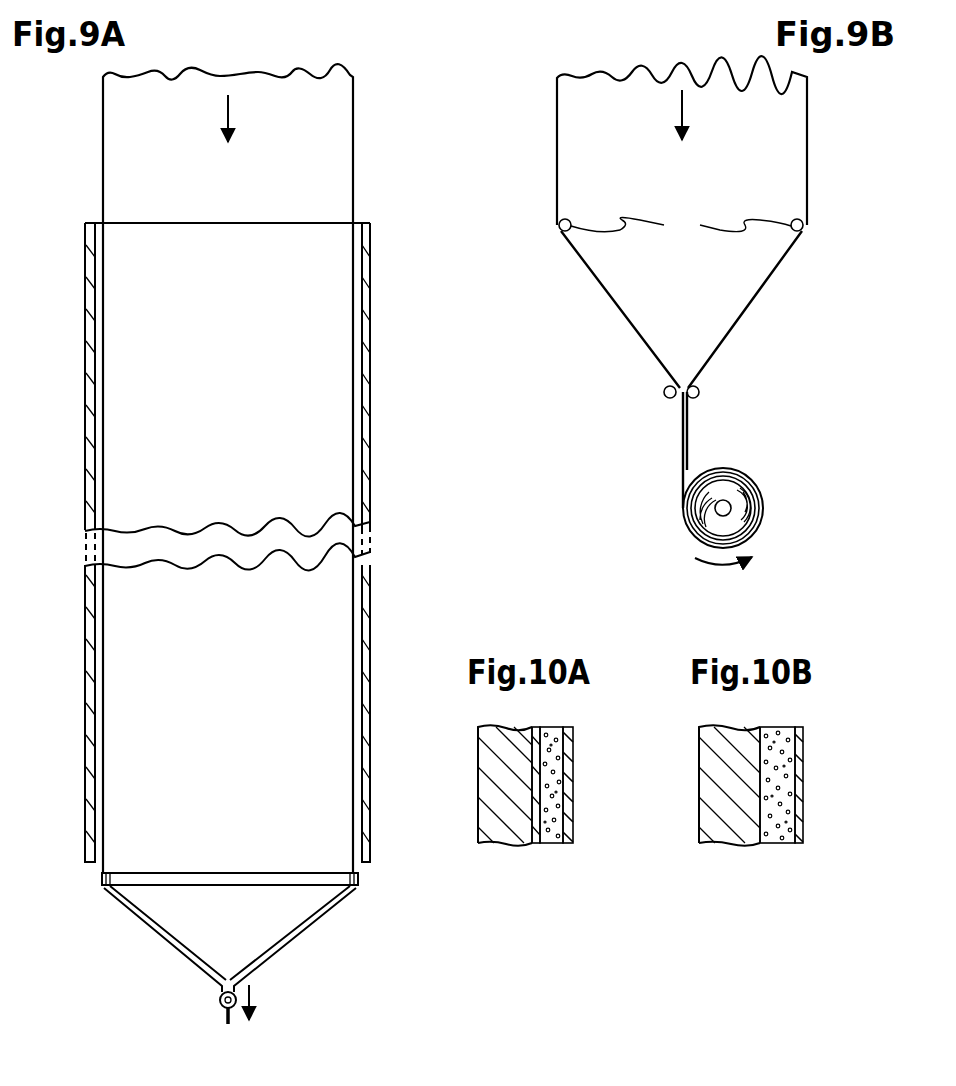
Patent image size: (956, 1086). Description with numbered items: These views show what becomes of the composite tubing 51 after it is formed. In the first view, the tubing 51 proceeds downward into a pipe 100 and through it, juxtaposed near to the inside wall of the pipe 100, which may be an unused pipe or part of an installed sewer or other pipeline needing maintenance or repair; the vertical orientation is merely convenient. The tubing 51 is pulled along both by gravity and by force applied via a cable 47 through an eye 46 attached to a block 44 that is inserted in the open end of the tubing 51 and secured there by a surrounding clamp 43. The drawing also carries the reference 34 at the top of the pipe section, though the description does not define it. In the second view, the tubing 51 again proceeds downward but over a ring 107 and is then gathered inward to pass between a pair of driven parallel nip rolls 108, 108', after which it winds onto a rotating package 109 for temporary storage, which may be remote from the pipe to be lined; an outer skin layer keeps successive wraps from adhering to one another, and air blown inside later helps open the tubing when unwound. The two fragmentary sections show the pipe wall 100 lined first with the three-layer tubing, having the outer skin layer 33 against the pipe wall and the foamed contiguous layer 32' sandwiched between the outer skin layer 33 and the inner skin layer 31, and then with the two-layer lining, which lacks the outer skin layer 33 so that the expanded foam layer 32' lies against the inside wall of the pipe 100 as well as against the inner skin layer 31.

In FIG. 9A, the tubing 51 is at (354, 152).
In FIG. 9B, the tubing 51 is at (556, 122).
In FIG. 9A, the housing / chamber walls 34 is at (364, 225).
In FIG. 9A, the pipe 100 is at (371, 342).
In FIG. 10A, the pipe 100 is at (477, 765).
In FIG. 10B, the pipe 100 is at (698, 792).
In FIG. 9A, the clamp 43 is at (360, 884).
In FIG. 9A, the block 44 is at (298, 938).
In FIG. 9A, the eye 46 is at (222, 996).
In FIG. 9A, the cable 47 is at (226, 1016).
In FIG. 9B, the ring 107 is at (681, 226).
In FIG. 9B, the nip roll 108 is at (681, 318).
In FIG. 9B, the nip roll 108' is at (732, 392).
In FIG. 9B, the rotating package 109 is at (764, 510).
In FIG. 10A, the outer skin layer 33 is at (536, 845).
In FIG. 10A, the particle layer 32' is at (567, 812).
In FIG. 10B, the particle layer 32' is at (777, 812).
In FIG. 10A, the inner skin layer 31 is at (574, 766).
In FIG. 10B, the inner skin layer 31 is at (804, 776).